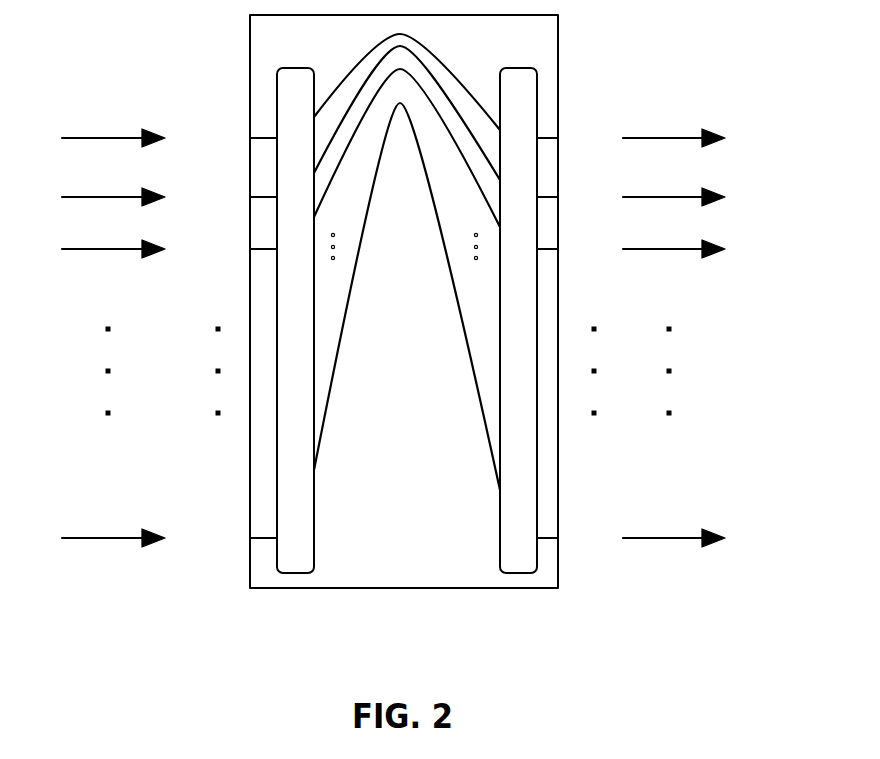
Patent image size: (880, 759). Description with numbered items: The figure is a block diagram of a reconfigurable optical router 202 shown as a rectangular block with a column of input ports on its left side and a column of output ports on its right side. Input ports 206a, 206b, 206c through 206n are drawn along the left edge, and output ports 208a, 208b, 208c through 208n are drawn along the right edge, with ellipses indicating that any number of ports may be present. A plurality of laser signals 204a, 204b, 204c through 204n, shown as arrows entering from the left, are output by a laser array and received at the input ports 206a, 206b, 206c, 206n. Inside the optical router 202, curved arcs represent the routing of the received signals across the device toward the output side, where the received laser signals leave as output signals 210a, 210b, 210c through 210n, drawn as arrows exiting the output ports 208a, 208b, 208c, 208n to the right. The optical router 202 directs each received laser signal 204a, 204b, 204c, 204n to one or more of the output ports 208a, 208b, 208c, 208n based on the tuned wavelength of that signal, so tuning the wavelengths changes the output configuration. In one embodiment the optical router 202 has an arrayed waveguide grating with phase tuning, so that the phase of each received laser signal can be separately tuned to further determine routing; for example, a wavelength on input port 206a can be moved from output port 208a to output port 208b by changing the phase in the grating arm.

The optical router 202 is at (385, 530).
The laser signal 204a is at (90, 137).
The laser signal 204b is at (90, 196).
The laser signal 204c is at (90, 248).
The laser signal 204n is at (90, 537).
The input port 206a is at (250, 137).
The input port 206b is at (250, 196).
The input port 206c is at (250, 248).
The input port 206n is at (250, 537).
The output port 208a is at (558, 137).
The output port 208b is at (558, 196).
The output port 208c is at (558, 248).
The output port 208n is at (558, 537).
The output signal 210a is at (650, 137).
The output signal 210b is at (650, 196).
The output signal 210c is at (650, 248).
The output signal 210n is at (650, 537).